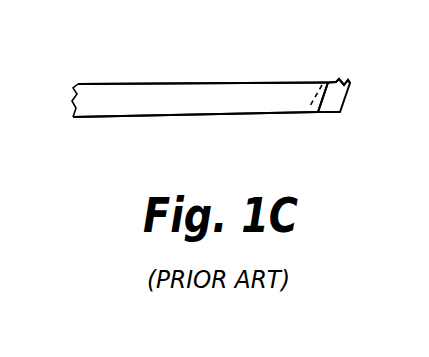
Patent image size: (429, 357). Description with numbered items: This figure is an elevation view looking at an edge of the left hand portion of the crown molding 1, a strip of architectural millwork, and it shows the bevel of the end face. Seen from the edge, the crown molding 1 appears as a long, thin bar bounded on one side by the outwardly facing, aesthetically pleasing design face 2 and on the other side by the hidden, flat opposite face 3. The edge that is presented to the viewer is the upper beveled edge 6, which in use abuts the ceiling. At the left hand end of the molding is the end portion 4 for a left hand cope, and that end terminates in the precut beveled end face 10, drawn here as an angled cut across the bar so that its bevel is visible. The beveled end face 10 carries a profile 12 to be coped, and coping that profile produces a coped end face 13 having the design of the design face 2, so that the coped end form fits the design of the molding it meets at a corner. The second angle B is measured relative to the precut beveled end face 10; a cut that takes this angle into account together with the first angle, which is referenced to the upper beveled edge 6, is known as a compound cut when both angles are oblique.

The crown molding 1 is at (3, 90).
The design face 2 is at (137, 83).
The opposite face 3 is at (100, 118).
The end portion 4 is at (102, 83).
The upper beveled edge 6 is at (212, 93).
The beveled end face 10 is at (336, 98).
The profile 12 is at (339, 82).
The coped end face 13 is at (308, 112).
The second angle B is at (312, 84).